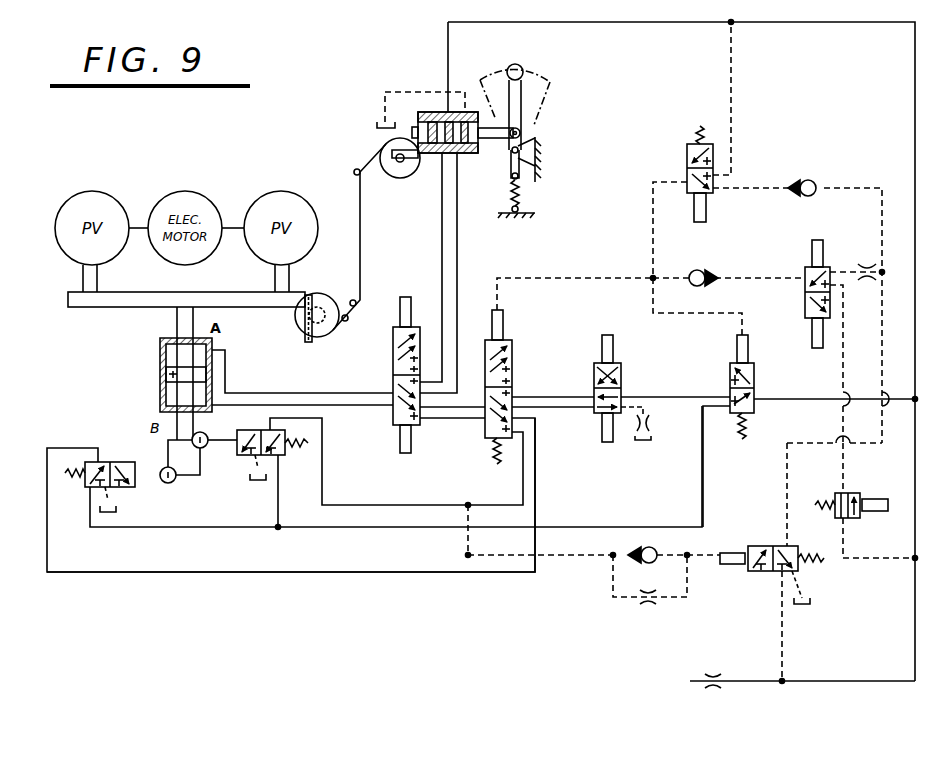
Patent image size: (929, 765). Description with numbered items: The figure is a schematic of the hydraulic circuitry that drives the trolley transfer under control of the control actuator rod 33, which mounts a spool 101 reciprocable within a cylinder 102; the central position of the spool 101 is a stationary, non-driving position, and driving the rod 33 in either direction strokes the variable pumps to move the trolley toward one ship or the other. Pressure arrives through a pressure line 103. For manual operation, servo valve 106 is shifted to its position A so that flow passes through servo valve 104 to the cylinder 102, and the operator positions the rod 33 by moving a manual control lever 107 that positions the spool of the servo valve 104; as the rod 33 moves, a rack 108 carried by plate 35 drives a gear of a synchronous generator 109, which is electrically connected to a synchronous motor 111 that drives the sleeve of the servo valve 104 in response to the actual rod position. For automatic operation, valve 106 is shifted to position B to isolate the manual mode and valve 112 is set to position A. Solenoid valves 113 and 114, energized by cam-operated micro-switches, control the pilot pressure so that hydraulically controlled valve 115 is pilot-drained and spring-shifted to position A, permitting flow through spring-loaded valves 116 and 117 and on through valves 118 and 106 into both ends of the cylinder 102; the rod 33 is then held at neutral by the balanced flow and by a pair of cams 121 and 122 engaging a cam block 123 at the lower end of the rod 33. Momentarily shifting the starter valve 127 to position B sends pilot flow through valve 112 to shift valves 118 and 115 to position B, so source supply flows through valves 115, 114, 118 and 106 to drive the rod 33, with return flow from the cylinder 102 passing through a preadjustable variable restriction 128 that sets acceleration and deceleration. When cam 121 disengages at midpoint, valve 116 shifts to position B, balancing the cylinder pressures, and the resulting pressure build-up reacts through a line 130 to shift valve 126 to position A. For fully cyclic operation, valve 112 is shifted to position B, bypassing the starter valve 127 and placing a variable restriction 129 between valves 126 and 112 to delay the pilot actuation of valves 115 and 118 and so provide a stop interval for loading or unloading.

The control actuator rod 33 is at (178, 325).
The plate 35 is at (68, 300).
The spool 101 is at (166, 374).
The cylinder 102 is at (160, 402).
The pressure line 103 is at (863, 684).
The servo valve 104 is at (432, 110).
The servo valve 106 is at (394, 362).
The manual control lever 107 is at (517, 66).
The rack 108 is at (305, 341).
The synchronous generator 109 is at (323, 334).
The synchronous motor 111 is at (408, 170).
The valve 112 is at (805, 277).
The valve 113 is at (688, 156).
The valve 114 is at (623, 384).
The hydraulically controlled valve 115 is at (757, 386).
The valve 116 is at (100, 470).
The valve 117 is at (265, 430).
The valve 118 is at (489, 434).
The cam 121 is at (165, 484).
The cam 122 is at (204, 449).
The cam block 123 is at (193, 478).
The valve 126 is at (762, 574).
The starter valve 127 is at (858, 494).
The variable restriction 128 is at (650, 426).
The variable restriction 129 is at (872, 262).
The line 130 is at (542, 566).